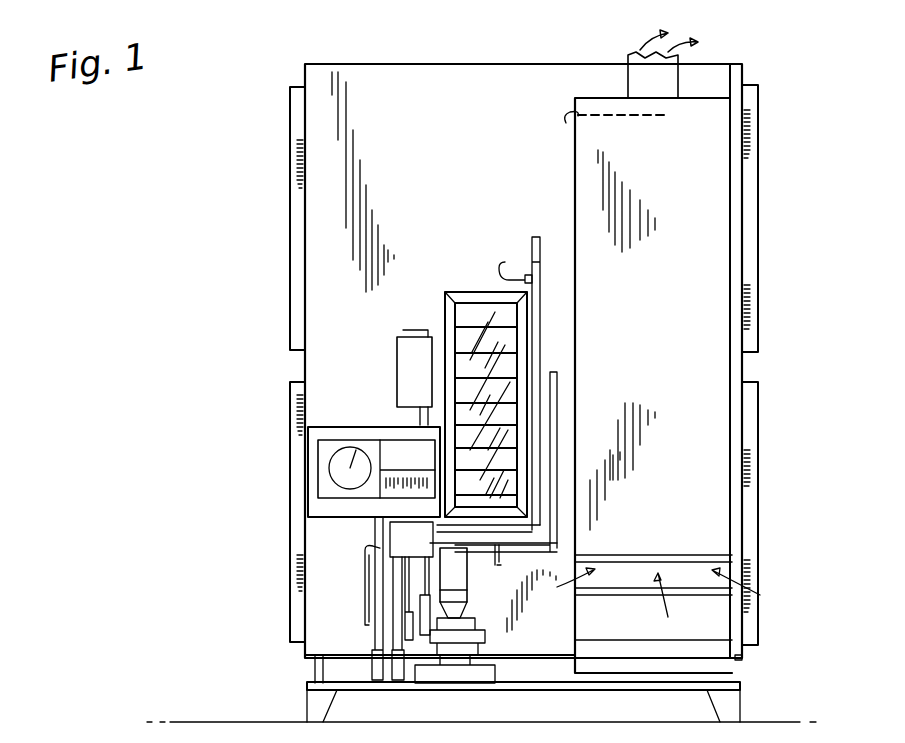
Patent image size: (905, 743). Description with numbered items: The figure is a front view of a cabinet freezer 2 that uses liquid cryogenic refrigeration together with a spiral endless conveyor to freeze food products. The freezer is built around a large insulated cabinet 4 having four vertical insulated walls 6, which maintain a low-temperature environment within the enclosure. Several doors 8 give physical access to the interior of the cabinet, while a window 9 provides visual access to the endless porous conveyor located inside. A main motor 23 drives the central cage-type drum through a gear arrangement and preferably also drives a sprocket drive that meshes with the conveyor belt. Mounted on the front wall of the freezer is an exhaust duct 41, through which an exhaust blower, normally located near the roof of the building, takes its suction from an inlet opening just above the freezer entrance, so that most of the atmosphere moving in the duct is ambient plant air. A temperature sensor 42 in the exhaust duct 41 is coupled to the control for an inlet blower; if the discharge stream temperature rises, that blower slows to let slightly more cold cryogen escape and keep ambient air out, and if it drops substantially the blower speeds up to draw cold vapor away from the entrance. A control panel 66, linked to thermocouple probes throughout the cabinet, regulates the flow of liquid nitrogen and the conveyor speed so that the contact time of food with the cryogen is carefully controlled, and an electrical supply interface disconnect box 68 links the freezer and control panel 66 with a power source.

The cabinet freezer 2 is at (283, 125).
The insulated cabinet 4 is at (470, 81).
The vertical insulated walls 6 is at (468, 162).
The doors 8 is at (290, 245).
The window 9 is at (470, 313).
The main motor 23 is at (478, 608).
The exhaust duct 41 is at (660, 338).
The temperature sensor 42 is at (661, 116).
The control panel 66 is at (366, 400).
The electrical supply interface disconnect box 68 is at (408, 352).